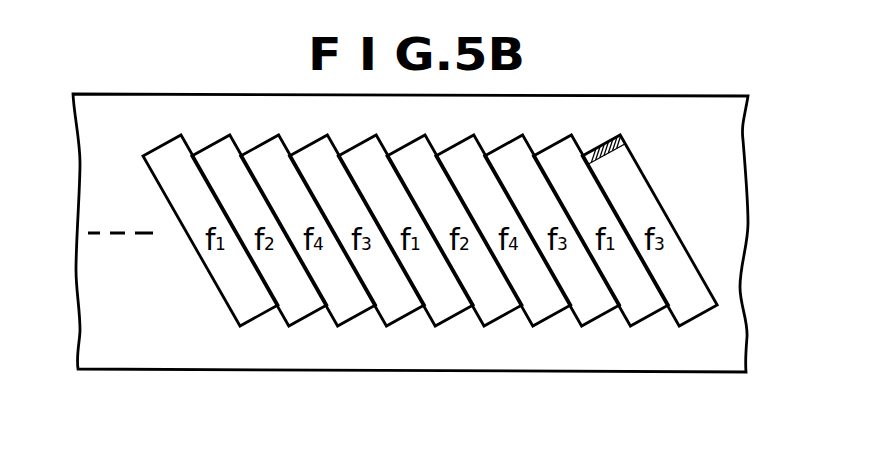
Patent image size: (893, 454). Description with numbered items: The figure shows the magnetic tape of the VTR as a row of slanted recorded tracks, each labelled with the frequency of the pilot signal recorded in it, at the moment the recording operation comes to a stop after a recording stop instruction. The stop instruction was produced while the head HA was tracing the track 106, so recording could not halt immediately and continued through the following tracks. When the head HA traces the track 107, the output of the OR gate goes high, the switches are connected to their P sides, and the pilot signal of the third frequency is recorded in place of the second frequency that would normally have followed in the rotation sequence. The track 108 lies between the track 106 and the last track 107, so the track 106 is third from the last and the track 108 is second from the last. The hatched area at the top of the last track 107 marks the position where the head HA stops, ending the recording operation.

The track 106 is at (587, 318).
The track 108 is at (647, 317).
The track 107 is at (698, 313).
The head HA is at (612, 138).